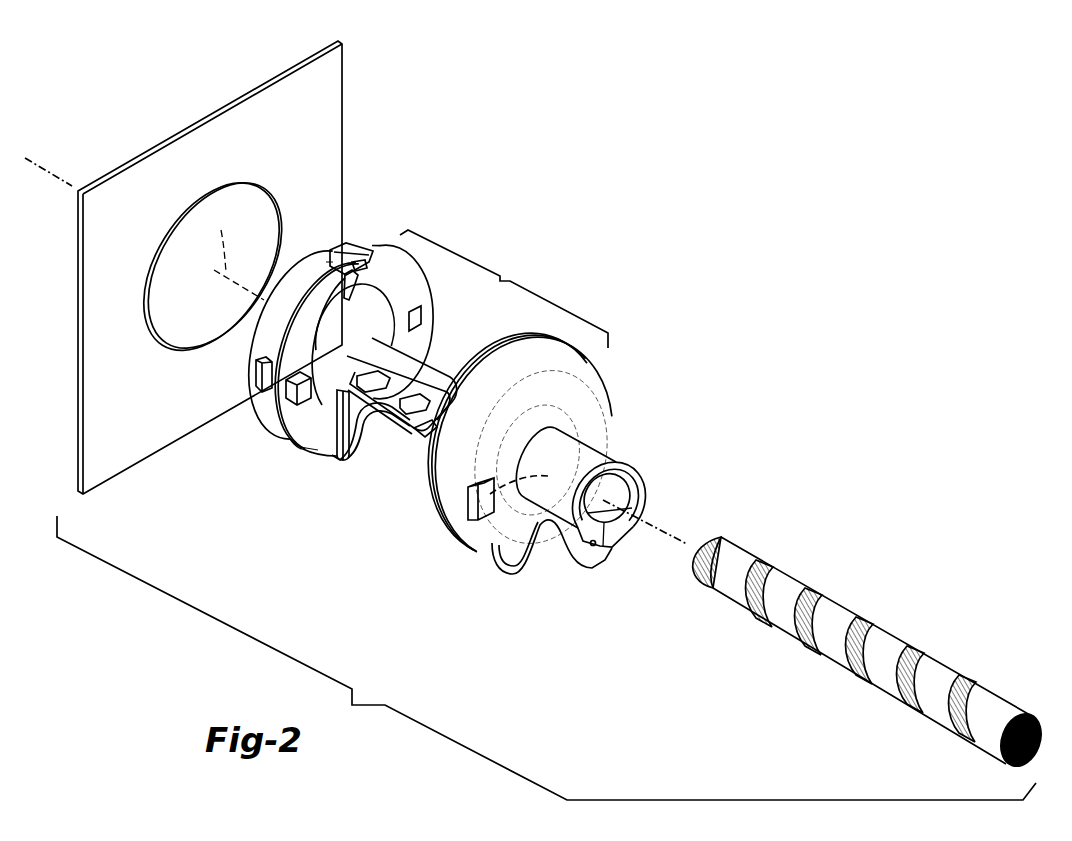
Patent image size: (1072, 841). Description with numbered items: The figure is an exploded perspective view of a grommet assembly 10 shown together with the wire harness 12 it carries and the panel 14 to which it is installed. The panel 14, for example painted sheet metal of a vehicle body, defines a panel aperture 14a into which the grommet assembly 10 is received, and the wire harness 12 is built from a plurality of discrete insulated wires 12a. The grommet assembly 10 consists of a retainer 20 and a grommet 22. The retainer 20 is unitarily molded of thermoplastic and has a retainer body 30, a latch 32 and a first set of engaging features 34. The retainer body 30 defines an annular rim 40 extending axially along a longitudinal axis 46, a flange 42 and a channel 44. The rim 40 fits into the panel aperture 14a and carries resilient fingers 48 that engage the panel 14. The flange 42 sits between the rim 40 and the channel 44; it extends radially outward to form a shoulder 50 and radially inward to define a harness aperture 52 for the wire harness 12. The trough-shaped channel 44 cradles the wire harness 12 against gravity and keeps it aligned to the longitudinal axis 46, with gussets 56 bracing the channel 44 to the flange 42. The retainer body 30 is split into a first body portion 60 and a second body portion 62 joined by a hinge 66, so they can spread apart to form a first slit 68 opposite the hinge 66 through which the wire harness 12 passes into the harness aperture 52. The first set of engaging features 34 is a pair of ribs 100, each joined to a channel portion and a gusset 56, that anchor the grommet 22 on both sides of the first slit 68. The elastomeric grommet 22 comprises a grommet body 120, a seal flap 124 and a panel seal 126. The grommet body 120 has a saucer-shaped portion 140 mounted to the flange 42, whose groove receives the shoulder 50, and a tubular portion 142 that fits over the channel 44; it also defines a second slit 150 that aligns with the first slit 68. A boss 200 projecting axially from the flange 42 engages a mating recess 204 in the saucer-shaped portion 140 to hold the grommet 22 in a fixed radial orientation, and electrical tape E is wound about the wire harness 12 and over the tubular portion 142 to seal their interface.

The grommet assembly 10 is at (504, 289).
The wire harness 12 is at (870, 650).
The insulated wires 12a is at (862, 622).
The panel 14 is at (328, 96).
The panel aperture 14a is at (242, 197).
The retainer 20 is at (395, 271).
The grommet 22 is at (527, 338).
The retainer body 30 is at (288, 432).
The latch 32 is at (393, 370).
The first set of engaging features 34 is at (337, 457).
The rim 40 is at (282, 322).
The flange 42 is at (292, 350).
The channel 44 is at (448, 390).
The longitudinal axis 46 is at (237, 252).
The resilient fingers 48 is at (257, 372).
The shoulder 50 is at (378, 250).
The harness aperture 52 is at (352, 318).
The gussets 56 is at (333, 427).
The first body portion 60 is at (270, 398).
The second body portion 62 is at (421, 291).
The hinge 66 is at (330, 262).
The first slit 68 is at (433, 425).
The ribs 100 is at (374, 447).
The grommet body 120 is at (526, 479).
The seal flap 124 is at (548, 556).
The panel seal 126 is at (438, 526).
The saucer-shaped portion 140 is at (590, 387).
The tubular portion 142 is at (555, 438).
The second slit 150 is at (617, 530).
The boss 200 is at (333, 417).
The mating recess 204 is at (534, 480).
The electrical tape E is at (747, 553).